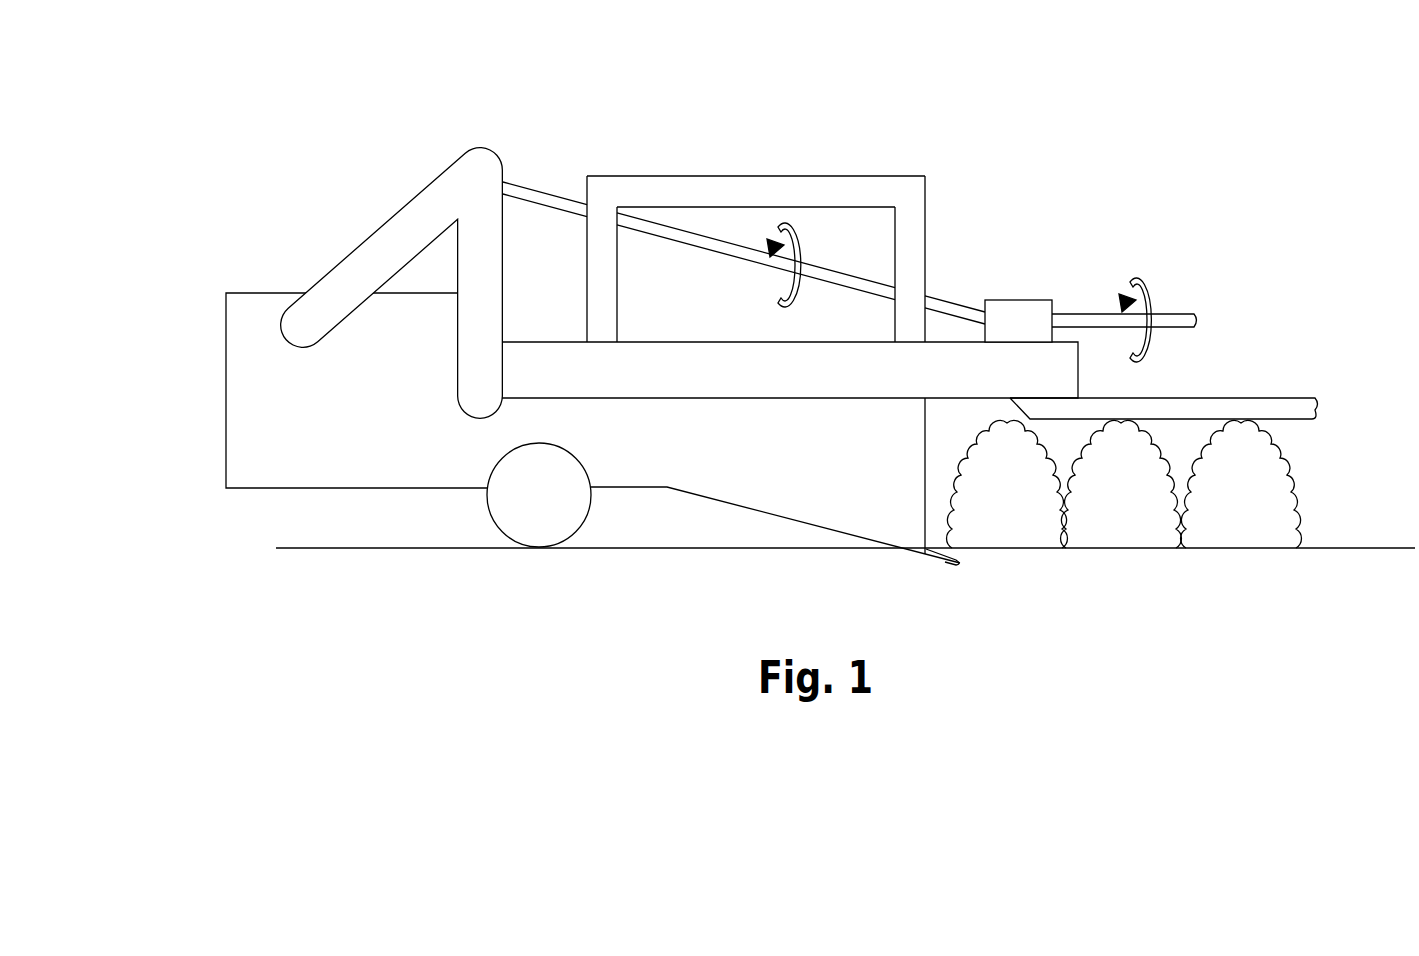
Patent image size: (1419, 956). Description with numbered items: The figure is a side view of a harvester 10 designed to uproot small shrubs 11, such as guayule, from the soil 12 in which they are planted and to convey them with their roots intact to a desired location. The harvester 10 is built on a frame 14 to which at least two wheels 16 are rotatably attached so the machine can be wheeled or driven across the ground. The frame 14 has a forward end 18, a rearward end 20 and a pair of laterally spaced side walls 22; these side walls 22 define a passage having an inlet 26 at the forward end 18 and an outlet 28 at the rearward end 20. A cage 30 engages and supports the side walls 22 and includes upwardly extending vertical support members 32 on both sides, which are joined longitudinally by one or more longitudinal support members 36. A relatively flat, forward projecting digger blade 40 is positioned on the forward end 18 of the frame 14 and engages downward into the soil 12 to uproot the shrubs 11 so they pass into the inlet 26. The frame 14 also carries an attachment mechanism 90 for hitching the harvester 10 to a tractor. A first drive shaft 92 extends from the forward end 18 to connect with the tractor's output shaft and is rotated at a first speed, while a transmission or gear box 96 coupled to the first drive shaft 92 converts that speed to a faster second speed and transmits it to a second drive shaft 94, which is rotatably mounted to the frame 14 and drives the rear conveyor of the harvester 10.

The harvester 10 is at (318, 120).
The small shrubs 11 is at (1268, 473).
The soil 12 is at (1352, 546).
The frame 14 is at (248, 478).
The wheels 16 is at (527, 528).
The forward end 18 is at (900, 456).
The rearward end 20 is at (197, 427).
The side walls 22 is at (362, 429).
The inlet 26 is at (933, 497).
The outlet 28 is at (197, 350).
The cage 30 is at (756, 207).
The vertical support members 32 is at (604, 285).
The longitudinal support members 36 is at (737, 192).
The digger blade 40 is at (940, 567).
The attachment mechanism 90 is at (1237, 398).
The first drive shaft 92 is at (1178, 312).
The second drive shaft 94 is at (706, 240).
The transmission or gear box 96 is at (1020, 320).